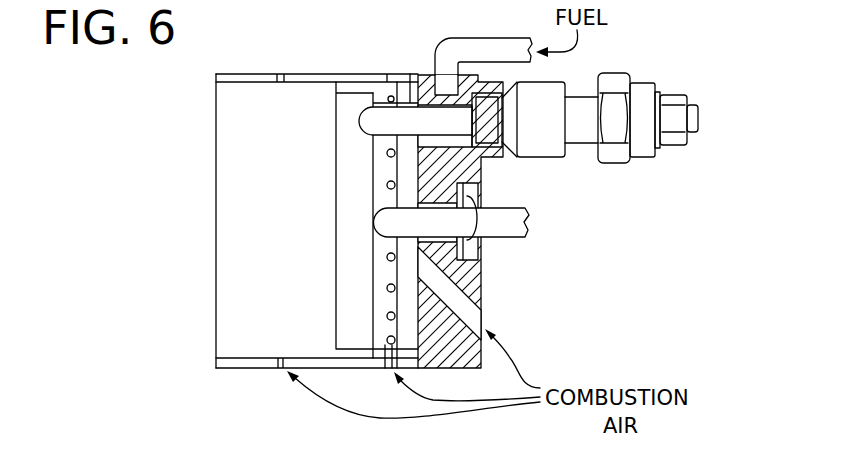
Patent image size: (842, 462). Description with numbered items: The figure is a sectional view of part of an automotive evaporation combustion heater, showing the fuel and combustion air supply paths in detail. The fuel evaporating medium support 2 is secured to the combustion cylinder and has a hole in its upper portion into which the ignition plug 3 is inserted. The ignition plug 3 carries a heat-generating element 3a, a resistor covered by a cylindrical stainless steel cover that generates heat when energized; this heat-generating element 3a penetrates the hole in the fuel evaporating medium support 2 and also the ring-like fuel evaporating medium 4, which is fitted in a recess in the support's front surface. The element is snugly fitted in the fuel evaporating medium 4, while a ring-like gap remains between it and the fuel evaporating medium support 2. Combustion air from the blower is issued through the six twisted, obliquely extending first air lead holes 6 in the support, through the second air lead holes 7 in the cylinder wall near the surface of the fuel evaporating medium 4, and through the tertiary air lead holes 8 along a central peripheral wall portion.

The fuel evaporating medium support 2 is at (478, 277).
The ignition plug 3 is at (615, 160).
The heat-generating element 3a is at (362, 117).
The fuel evaporating medium 4 is at (407, 97).
The first air lead holes 6 is at (479, 318).
The second air lead holes 7 is at (385, 352).
The tertiary air lead holes 8 is at (280, 360).